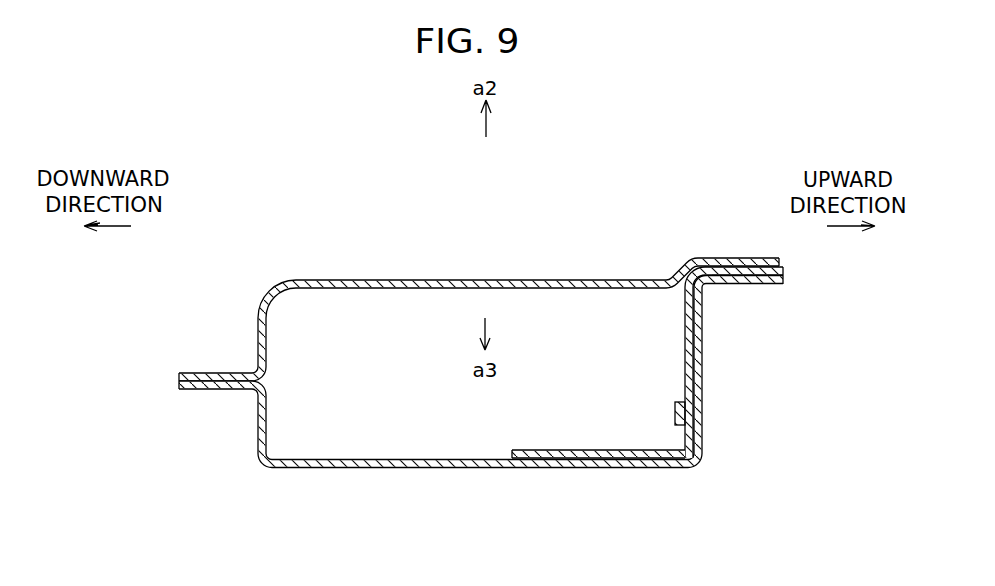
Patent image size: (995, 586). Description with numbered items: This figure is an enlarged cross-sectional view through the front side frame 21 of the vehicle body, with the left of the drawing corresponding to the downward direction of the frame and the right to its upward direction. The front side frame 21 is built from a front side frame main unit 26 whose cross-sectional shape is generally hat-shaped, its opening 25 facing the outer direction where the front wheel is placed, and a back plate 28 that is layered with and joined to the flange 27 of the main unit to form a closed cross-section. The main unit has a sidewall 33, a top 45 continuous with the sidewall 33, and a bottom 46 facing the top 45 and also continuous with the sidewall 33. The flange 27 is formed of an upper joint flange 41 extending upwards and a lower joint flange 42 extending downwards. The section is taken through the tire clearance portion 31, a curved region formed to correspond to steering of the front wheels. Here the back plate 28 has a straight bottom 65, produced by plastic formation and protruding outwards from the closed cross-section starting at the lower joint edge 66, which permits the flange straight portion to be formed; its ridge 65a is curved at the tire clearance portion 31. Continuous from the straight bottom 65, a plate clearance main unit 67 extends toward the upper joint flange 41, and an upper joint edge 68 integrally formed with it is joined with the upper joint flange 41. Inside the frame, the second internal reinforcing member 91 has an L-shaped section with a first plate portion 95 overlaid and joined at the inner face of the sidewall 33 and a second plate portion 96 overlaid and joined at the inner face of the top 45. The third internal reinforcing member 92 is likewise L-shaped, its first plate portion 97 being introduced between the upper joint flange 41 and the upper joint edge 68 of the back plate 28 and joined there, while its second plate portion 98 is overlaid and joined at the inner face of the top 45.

The front side frame 21 is at (274, 167).
The opening 25 is at (325, 392).
The front side frame main unit 26 is at (322, 469).
The flange 27 is at (729, 359).
The back plate 28 is at (435, 280).
The tire clearance portion 31 is at (375, 214).
The sidewall 33 is at (420, 470).
The upper joint flange 41 is at (729, 359).
The lower joint flange 42 is at (205, 389).
The top 45 is at (702, 381).
The bottom 46 is at (262, 468).
The straight bottom 65 is at (175, 371).
The ridge 65a is at (256, 287).
The lower joint edge 66 is at (219, 373).
The plate clearance main unit 67 is at (515, 280).
The upper joint edge 68 is at (740, 259).
The second internal reinforcing member 91 is at (525, 425).
The third internal reinforcing member 92 is at (650, 326).
The first plate portion 95 is at (582, 450).
The second plate portion 96 is at (678, 440).
The first plate portion 97 is at (784, 275).
The second plate portion 98 is at (684, 356).